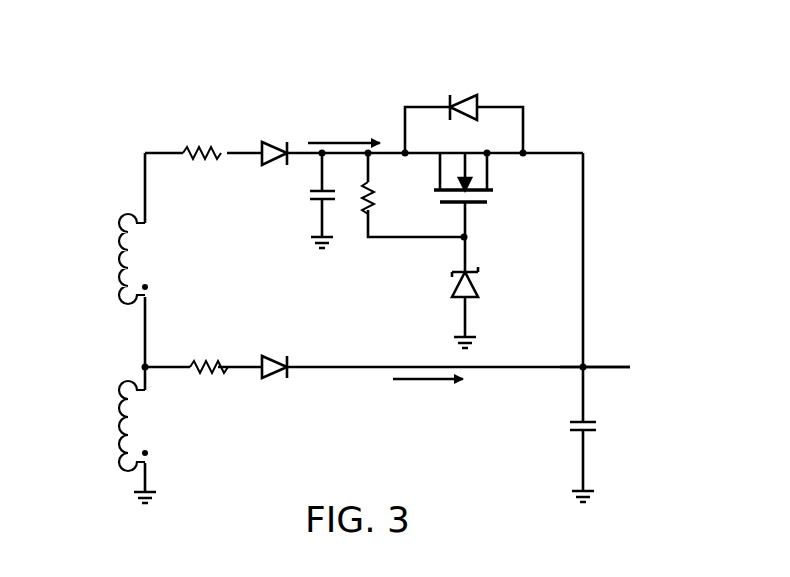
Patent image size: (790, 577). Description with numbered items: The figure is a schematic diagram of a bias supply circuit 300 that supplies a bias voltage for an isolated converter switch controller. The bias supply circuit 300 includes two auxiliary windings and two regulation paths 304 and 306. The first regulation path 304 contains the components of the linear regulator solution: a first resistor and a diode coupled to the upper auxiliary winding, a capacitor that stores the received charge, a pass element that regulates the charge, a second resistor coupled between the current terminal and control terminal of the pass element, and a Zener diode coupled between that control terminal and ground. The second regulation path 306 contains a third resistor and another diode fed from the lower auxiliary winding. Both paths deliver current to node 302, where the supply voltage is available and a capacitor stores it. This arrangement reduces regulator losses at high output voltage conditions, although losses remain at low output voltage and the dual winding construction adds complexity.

The bias supply circuit 300 is at (190, 70).
The node 302 is at (587, 362).
The first regulation path 304 is at (350, 140).
The second regulation path 306 is at (430, 383).